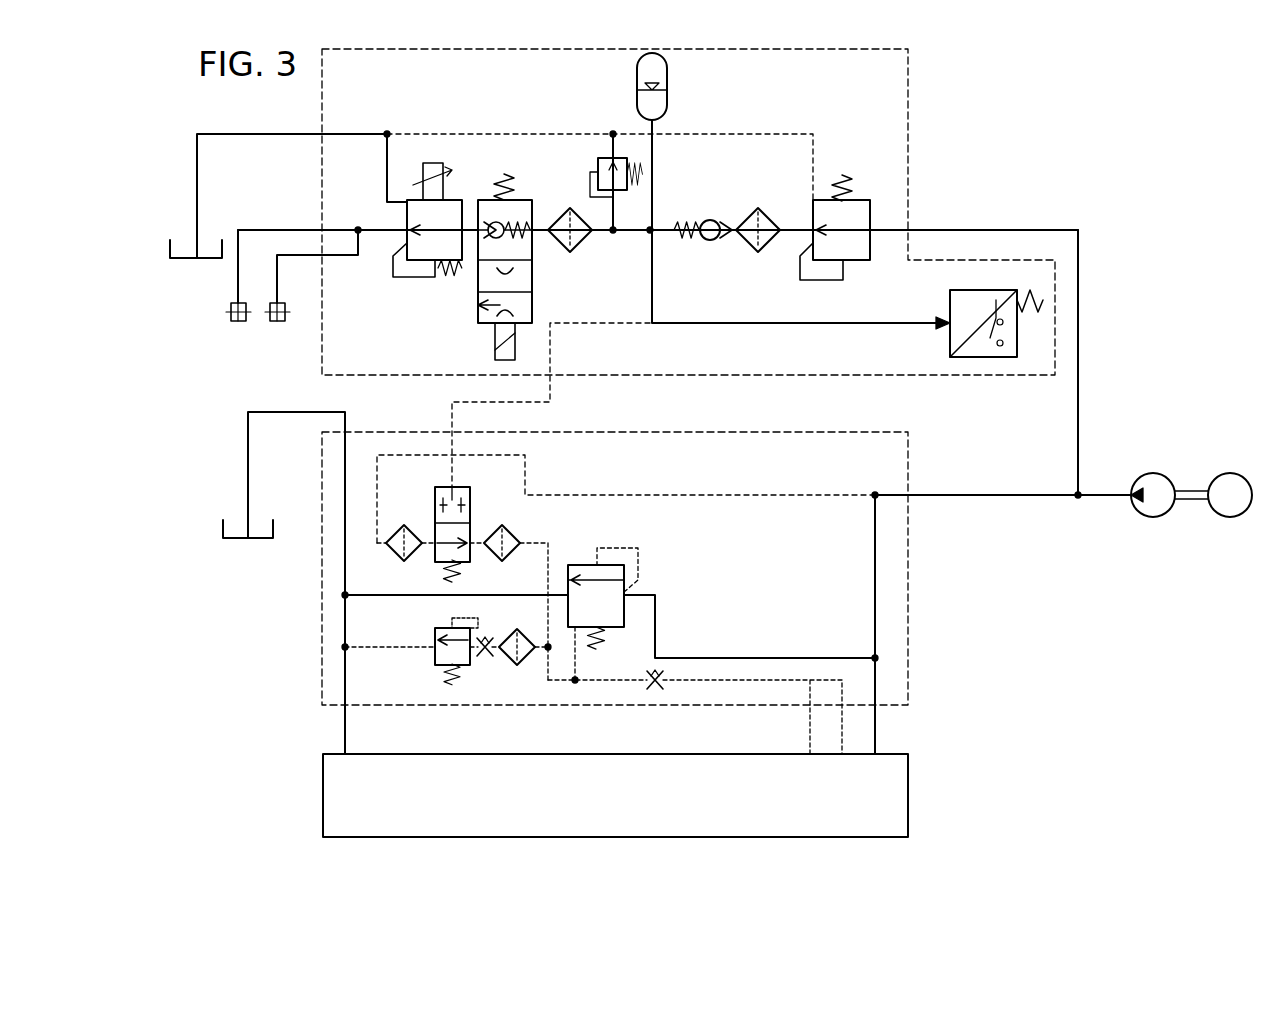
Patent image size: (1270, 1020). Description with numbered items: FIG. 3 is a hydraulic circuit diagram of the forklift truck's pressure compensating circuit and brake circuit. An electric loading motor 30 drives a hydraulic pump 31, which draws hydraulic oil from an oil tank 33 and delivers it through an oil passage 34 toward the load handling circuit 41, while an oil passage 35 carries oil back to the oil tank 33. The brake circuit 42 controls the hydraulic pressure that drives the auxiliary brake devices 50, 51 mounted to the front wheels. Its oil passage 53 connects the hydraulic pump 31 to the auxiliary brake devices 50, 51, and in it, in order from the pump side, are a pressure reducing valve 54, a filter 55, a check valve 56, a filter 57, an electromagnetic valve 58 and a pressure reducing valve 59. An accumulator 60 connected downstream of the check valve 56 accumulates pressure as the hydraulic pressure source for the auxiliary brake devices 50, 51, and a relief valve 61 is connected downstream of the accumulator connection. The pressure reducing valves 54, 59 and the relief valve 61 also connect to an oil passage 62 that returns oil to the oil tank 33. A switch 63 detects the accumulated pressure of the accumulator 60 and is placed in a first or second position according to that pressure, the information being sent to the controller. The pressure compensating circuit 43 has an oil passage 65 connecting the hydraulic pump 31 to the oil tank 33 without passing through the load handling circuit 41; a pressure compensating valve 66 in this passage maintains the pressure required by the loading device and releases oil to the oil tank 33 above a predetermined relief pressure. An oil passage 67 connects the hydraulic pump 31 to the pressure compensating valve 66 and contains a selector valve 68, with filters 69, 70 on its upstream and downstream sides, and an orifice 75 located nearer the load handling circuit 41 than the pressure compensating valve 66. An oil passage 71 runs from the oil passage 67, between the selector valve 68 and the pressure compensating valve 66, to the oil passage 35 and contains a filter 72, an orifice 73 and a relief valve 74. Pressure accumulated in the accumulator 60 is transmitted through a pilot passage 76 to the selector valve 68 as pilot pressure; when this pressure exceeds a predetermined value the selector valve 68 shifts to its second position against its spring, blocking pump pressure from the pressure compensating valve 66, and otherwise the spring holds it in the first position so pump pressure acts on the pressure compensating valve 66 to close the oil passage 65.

The electric loading motor 30 is at (1230, 518).
The hydraulic pump 31 is at (1155, 518).
The oil tank 33 is at (186, 262).
The oil passage 34 is at (1033, 497).
The oil passage 35 is at (248, 458).
The load handling circuit 41 is at (908, 790).
The brake circuit 42 is at (908, 82).
The pressure compensating circuit 43 is at (908, 622).
The auxiliary brake device 50 is at (238, 322).
The auxiliary brake device 51 is at (278, 322).
The oil passage 53 is at (1078, 345).
The pressure reducing valve 54 is at (855, 262).
The filter 55 is at (742, 250).
The check valve 56 is at (712, 218).
The filter 57 is at (584, 250).
The electromagnetic valve 58 is at (478, 310).
The pressure reducing valve 59 is at (447, 200).
The accumulator 60 is at (668, 78).
The relief valve 61 is at (598, 168).
The oil passage 62 is at (527, 133).
The switch 63 is at (975, 357).
The oil passage 65 is at (760, 656).
The pressure compensating valve 66 is at (580, 565).
The oil passage 67 is at (688, 495).
The selector valve 68 is at (470, 497).
The filter 69 is at (392, 525).
The filter 70 is at (520, 540).
The oil passage 71 is at (415, 650).
The filter 72 is at (520, 662).
The orifice 73 is at (488, 642).
The relief valve 74 is at (438, 635).
The orifice 75 is at (658, 690).
The pilot passage 76 is at (552, 388).